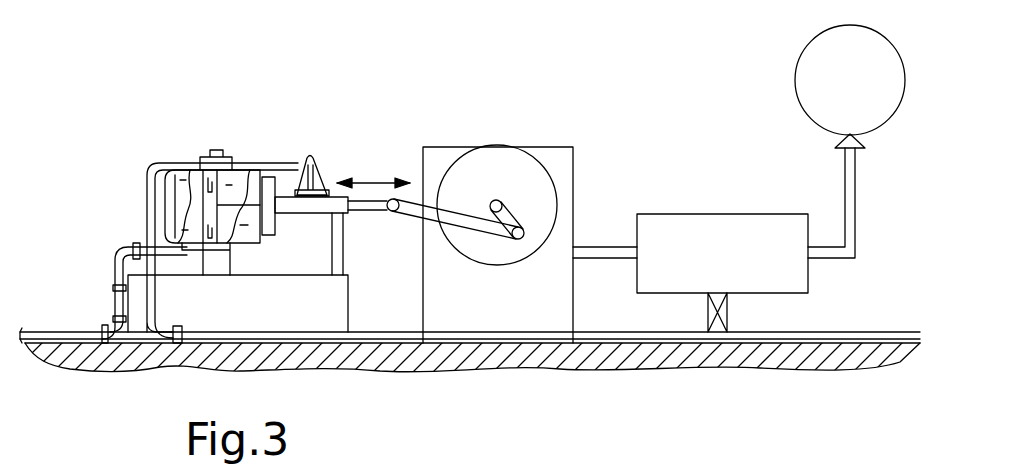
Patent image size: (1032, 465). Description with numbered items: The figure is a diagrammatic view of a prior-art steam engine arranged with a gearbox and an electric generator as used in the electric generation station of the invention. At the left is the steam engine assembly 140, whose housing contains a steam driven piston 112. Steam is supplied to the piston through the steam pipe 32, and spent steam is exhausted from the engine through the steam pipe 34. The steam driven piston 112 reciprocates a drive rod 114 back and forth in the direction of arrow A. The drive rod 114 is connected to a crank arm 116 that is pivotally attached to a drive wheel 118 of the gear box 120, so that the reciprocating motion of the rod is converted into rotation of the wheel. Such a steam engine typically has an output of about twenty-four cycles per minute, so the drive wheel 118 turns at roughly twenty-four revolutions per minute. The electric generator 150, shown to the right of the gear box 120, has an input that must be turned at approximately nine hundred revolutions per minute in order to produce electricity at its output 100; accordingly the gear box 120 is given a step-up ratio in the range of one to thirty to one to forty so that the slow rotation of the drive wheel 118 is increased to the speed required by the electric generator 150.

The output 100 is at (803, 53).
The steam driven piston 112 is at (217, 190).
The drive rod 114 is at (360, 208).
The crank arm 116 is at (475, 225).
The drive wheel 118 is at (508, 168).
The gear box 120 is at (463, 122).
The engine assembly 140 is at (143, 157).
The electric generator 150 is at (733, 210).
The steam pipe 32 is at (147, 185).
The steam pipe 34 is at (117, 273).